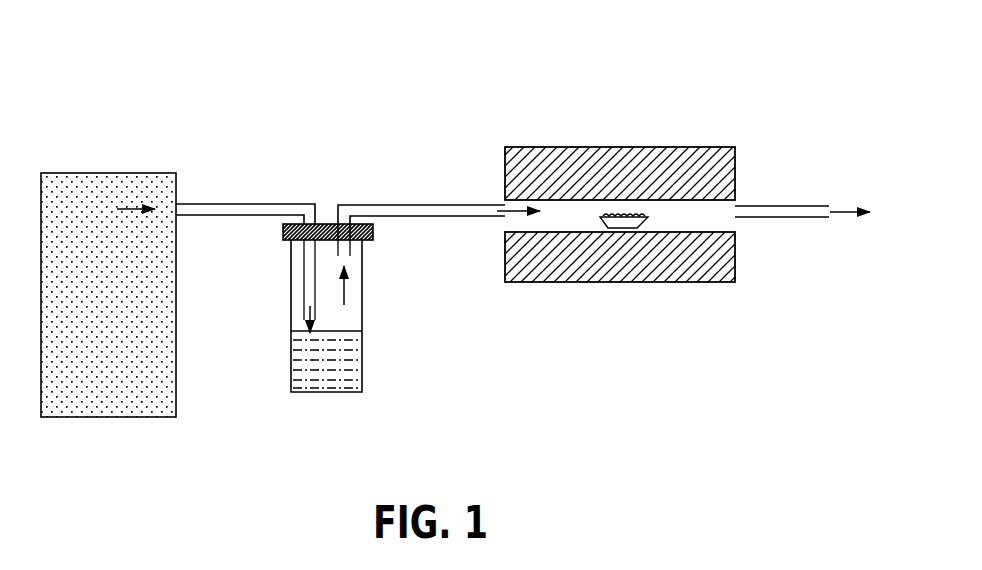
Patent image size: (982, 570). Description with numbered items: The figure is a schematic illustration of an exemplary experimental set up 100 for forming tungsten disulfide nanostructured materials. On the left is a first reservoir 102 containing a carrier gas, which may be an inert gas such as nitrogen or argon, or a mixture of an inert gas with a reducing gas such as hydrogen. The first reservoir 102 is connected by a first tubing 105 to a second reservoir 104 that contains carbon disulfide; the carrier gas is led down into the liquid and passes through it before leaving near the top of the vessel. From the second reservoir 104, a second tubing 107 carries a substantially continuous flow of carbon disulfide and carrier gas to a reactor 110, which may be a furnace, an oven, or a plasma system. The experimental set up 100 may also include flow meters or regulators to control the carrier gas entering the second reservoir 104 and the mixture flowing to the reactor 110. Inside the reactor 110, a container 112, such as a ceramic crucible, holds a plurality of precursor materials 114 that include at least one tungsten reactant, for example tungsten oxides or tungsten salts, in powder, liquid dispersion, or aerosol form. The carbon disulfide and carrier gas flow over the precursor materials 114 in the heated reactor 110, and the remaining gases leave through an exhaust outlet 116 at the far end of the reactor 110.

The experimental set up 100 is at (90, 90).
The first reservoir 102 is at (140, 383).
The second reservoir 104 is at (322, 370).
The first tubing 105 is at (264, 202).
The second tubing 107 is at (406, 202).
The reactor 110 is at (518, 126).
The container 112 is at (641, 223).
The precursor materials 114 is at (607, 210).
The exhaust outlet 116 is at (805, 195).